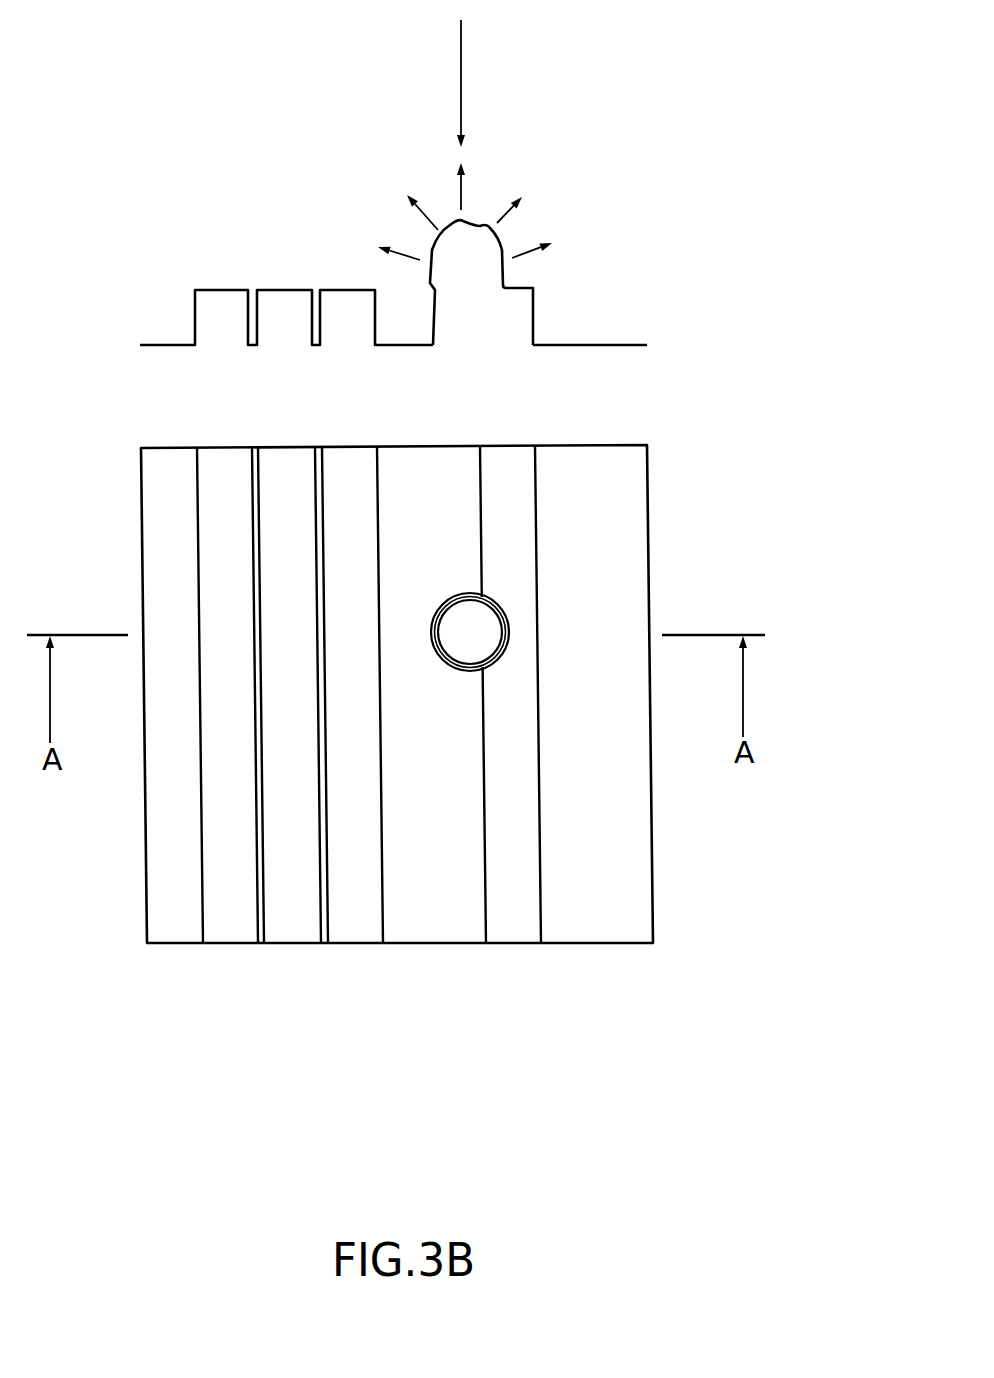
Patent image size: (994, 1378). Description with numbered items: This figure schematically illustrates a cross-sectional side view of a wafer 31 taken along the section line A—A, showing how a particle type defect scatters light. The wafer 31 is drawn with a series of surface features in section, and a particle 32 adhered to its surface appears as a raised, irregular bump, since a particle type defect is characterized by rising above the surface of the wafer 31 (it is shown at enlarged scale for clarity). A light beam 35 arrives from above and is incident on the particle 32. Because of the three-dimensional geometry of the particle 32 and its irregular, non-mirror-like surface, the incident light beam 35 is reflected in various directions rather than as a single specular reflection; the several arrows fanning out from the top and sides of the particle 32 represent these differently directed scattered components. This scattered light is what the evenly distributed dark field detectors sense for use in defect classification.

The wafer 31 is at (428, 944).
The particle type defect 32 is at (458, 210).
The light beam 35 is at (463, 80).